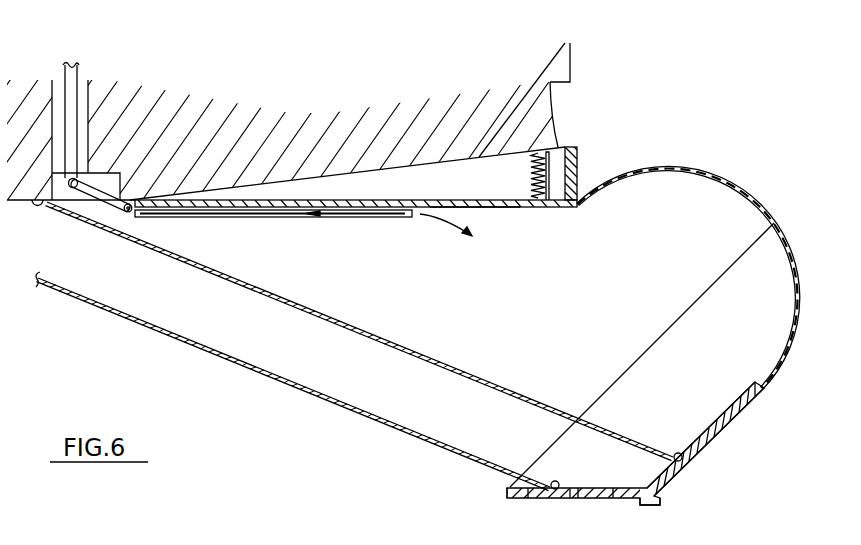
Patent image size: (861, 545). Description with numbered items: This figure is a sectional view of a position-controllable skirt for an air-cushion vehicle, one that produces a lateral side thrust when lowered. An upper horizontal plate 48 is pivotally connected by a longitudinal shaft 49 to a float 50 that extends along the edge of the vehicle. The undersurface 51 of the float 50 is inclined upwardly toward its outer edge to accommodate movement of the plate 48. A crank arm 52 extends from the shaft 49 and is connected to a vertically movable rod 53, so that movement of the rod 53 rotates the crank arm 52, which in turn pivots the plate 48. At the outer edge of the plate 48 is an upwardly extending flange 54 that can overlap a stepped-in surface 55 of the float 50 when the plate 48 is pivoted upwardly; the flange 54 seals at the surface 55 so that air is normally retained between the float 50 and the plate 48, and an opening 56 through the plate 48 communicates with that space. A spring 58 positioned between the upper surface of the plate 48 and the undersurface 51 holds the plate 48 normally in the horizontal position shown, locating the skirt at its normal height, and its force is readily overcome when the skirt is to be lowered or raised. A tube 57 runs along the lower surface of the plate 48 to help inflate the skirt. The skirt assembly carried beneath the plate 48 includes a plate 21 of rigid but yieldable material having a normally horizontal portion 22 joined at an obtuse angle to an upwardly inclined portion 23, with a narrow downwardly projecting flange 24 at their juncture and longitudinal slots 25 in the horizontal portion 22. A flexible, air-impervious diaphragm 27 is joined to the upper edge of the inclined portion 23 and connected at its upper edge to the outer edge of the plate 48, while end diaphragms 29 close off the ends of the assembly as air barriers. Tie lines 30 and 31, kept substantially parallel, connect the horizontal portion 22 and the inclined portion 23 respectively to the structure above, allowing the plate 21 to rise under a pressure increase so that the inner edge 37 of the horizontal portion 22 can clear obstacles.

The plate 21 is at (667, 463).
The horizontal portion 22 is at (596, 499).
The inclined portion 23 is at (700, 453).
The flange 24 is at (655, 506).
The slots 25 is at (613, 488).
The flexible diaphragm 27 is at (759, 203).
The diaphragm 29 is at (697, 322).
The tie line 30 is at (323, 390).
The tie line 31 is at (422, 356).
The inner edge 37 is at (506, 492).
The upper horizontal plate 48 is at (462, 205).
The longitudinal shaft 49 is at (129, 213).
The float 50 is at (558, 68).
The undersurface 51 is at (326, 176).
The crank arm 52 is at (98, 197).
The rod 53 is at (76, 70).
The flange 54 is at (569, 164).
The stepped-in surface 55 is at (555, 112).
The opening 56 is at (474, 204).
The tube 57 is at (343, 216).
The spring 58 is at (532, 174).